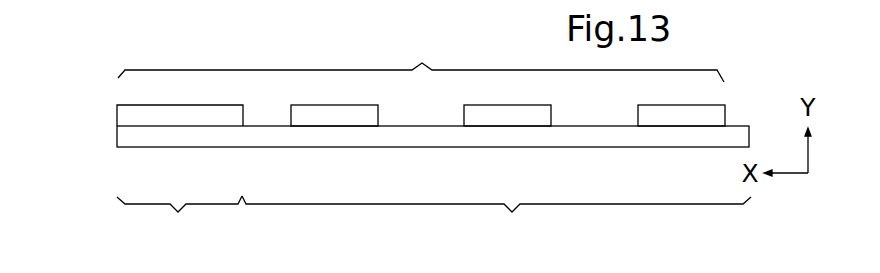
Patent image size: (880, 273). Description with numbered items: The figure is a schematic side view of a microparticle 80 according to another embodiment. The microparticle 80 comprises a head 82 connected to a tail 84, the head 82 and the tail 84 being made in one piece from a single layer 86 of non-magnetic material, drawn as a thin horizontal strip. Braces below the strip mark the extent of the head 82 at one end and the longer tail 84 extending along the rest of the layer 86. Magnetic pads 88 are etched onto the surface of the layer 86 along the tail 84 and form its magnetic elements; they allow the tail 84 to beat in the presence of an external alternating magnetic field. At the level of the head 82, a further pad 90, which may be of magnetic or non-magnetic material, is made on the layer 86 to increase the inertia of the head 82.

The microparticle 80 is at (421, 58).
The head 82 is at (179, 218).
The tail 84 is at (496, 218).
The layer 86 is at (737, 133).
The magnetic pads 88 is at (340, 115).
The pad 90 is at (122, 113).